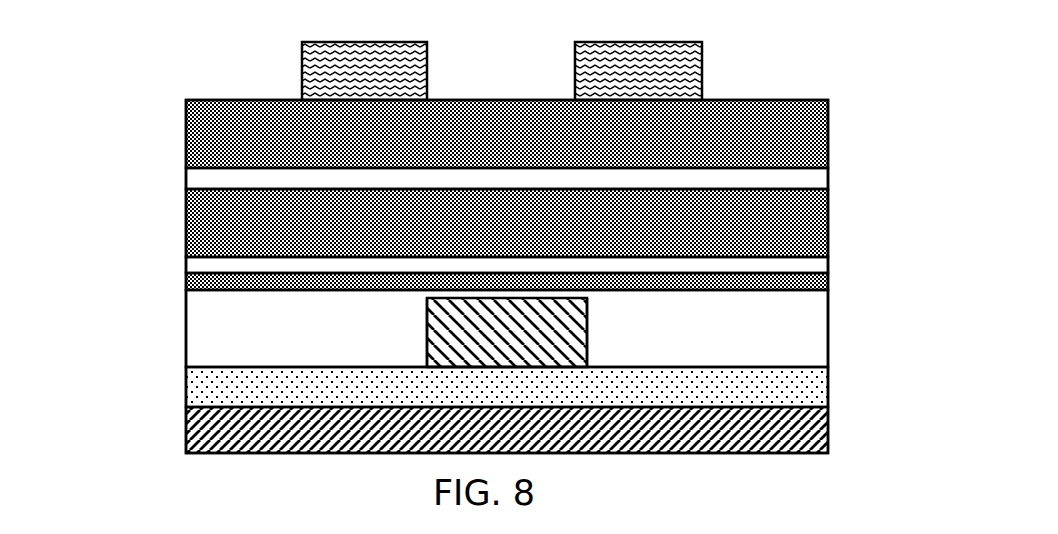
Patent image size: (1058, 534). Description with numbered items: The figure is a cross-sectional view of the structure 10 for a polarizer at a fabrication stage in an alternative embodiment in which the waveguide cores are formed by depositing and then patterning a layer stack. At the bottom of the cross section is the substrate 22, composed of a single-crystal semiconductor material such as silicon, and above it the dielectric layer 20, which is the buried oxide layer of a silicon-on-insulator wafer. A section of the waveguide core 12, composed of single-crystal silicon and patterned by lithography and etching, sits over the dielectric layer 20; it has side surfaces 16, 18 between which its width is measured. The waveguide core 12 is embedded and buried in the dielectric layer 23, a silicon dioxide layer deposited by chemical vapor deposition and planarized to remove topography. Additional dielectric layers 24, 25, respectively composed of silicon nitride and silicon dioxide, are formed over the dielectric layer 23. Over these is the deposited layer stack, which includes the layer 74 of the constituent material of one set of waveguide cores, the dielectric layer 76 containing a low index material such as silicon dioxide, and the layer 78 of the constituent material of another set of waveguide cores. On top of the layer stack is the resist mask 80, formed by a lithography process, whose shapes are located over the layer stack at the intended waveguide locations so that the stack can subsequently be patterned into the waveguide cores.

The structure 10 is at (132, 55).
The waveguide core 12 is at (552, 316).
The side surface 16 is at (427, 332).
The side surface 18 is at (587, 347).
The dielectric layer 20 is at (217, 393).
The substrate 22 is at (217, 442).
The dielectric layer 23 is at (207, 323).
The dielectric layer 24 is at (812, 284).
The dielectric layer 25 is at (207, 268).
The layer 74 is at (771, 210).
The dielectric layer 76 is at (203, 178).
The layer 78 is at (777, 140).
The resist mask 80 is at (325, 70).